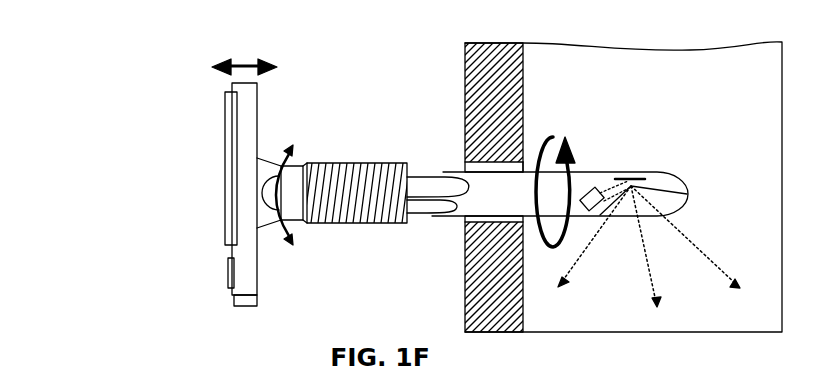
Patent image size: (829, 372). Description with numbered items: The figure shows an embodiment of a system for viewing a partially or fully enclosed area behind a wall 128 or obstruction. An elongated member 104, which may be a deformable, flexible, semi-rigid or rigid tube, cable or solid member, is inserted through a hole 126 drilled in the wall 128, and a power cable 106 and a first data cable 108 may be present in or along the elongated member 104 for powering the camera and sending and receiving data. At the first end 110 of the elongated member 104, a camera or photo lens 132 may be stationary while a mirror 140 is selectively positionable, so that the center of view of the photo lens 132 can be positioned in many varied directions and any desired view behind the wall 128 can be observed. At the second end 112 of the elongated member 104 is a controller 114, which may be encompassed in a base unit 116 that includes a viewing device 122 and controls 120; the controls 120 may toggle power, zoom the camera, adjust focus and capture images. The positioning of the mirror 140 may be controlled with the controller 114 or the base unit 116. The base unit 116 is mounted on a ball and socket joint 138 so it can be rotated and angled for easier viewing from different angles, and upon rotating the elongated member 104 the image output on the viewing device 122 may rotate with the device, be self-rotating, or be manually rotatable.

The elongated member 104 is at (494, 200).
The power cable 106 is at (433, 214).
The first data cable 108 is at (443, 177).
The first end 110 is at (687, 163).
The second end 112 is at (335, 157).
The controller 114 is at (234, 298).
The base unit 116 is at (213, 125).
The controls 120 is at (227, 270).
The viewing device 122 is at (231, 172).
The hole 126 is at (530, 158).
The wall 128 is at (481, 82).
The photo lens 132 is at (597, 190).
The ball and socket joint 138 is at (286, 216).
The mirror 140 is at (632, 176).